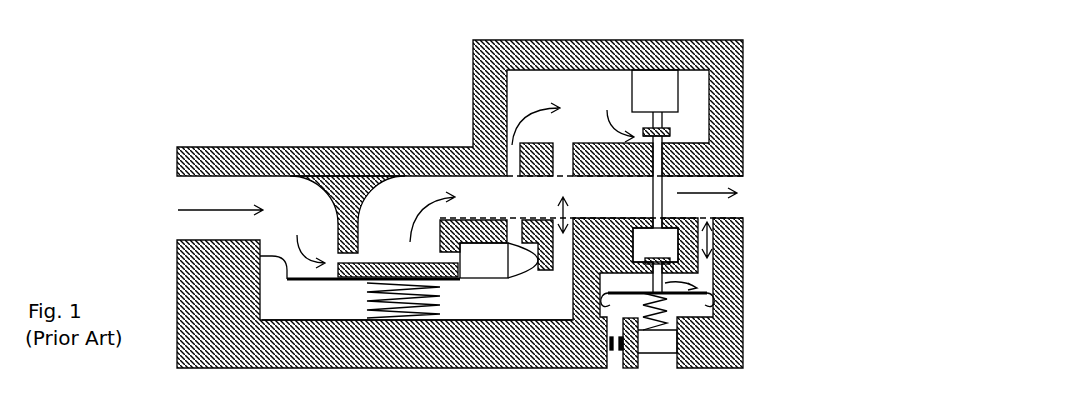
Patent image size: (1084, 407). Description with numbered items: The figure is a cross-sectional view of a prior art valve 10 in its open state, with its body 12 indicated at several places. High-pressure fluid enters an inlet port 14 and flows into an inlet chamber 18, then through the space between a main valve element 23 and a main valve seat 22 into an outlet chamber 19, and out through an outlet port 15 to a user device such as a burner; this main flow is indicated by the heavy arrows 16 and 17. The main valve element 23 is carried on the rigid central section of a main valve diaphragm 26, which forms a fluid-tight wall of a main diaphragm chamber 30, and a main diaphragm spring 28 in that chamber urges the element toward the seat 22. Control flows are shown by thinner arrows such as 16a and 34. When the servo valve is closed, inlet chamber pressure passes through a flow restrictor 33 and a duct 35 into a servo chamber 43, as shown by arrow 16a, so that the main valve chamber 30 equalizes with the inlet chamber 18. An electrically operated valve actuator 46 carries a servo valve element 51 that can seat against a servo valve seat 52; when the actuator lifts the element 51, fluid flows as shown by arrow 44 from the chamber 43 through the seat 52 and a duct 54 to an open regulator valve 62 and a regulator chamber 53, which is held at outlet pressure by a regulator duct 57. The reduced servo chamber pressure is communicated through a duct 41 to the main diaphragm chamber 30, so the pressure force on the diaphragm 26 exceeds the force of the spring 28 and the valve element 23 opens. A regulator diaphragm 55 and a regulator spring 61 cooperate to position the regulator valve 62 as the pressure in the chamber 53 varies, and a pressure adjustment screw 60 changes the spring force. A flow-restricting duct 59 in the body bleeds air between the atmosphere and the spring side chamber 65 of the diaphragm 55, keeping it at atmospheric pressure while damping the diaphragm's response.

The prior art valve 10 is at (321, 111).
The body 12 is at (277, 147).
The inlet port 14 is at (183, 200).
The outlet port 15 is at (740, 203).
The flow arrow 16 is at (200, 210).
The control flow arrow 16a is at (520, 282).
The flow arrow 17 is at (413, 212).
The inlet chamber 18 is at (260, 187).
The outlet chamber 19 is at (408, 187).
The main valve seat 22 is at (457, 253).
The main valve element 23 is at (438, 285).
The main valve diaphragm 26 is at (480, 282).
The main diaphragm spring 28 is at (363, 302).
The main diaphragm chamber 30 is at (290, 310).
The flow restrictor 33 is at (512, 236).
The control flow arrow 34 is at (487, 93).
The duct 35 is at (507, 202).
The duct 41 is at (567, 186).
The servo chamber 43 is at (583, 88).
The flow arrow 44 is at (607, 110).
The valve actuator 46 is at (667, 92).
The servo valve element 51 is at (662, 132).
The servo valve seat 52 is at (668, 139).
The regulator chamber 53 is at (700, 302).
The duct 54 is at (657, 187).
The regulator diaphragm 55 is at (713, 330).
The regulator duct 57 is at (700, 272).
The flow-restricting duct 59 is at (620, 307).
The pressure adjustment screw 60 is at (652, 345).
The regulator spring 61 is at (688, 363).
The regulator valve 62 is at (715, 283).
The spring side chamber 65 is at (632, 357).